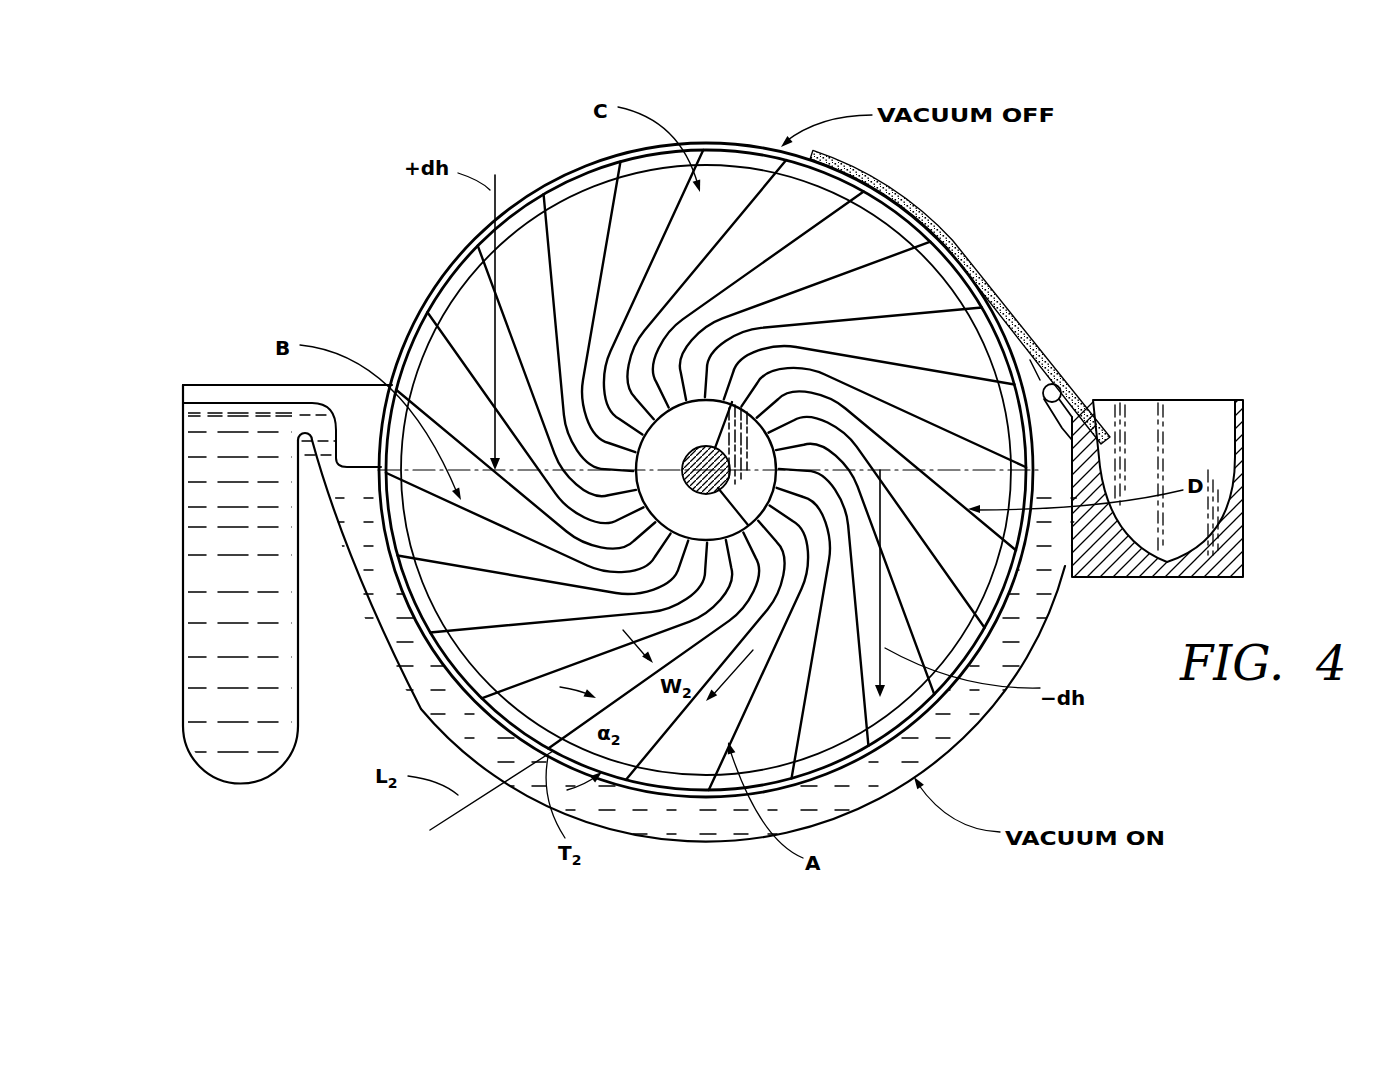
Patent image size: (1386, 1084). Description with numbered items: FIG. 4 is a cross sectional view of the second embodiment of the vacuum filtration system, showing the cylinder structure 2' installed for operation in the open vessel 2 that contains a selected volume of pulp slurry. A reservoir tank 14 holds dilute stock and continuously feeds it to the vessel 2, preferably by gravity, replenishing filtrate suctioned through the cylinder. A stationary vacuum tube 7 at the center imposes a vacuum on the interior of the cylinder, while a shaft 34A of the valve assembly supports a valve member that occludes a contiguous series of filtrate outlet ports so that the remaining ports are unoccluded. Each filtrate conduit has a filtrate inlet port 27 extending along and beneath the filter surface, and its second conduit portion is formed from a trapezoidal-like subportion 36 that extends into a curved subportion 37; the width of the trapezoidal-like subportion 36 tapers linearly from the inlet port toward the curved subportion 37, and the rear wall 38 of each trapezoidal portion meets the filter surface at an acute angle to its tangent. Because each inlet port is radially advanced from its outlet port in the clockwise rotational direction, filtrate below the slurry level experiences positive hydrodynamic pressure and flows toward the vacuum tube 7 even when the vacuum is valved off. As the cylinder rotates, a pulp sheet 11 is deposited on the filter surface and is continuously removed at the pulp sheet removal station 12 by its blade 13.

The vessel 2 is at (694, 637).
The cylinder structure 2' is at (706, 413).
The stationary vacuum tube 7 is at (690, 527).
The pulp sheet 11 is at (1015, 320).
The pulp sheet removal station 12 is at (1108, 318).
The blade 13 is at (1063, 378).
The reservoir tank 14 is at (182, 602).
The filtrate inlet port 27 is at (438, 292).
The shaft 34A is at (772, 368).
The trapezoidal-like subportion 36 is at (728, 651).
The curved subportion 37 is at (775, 572).
The rear wall 38 is at (627, 690).